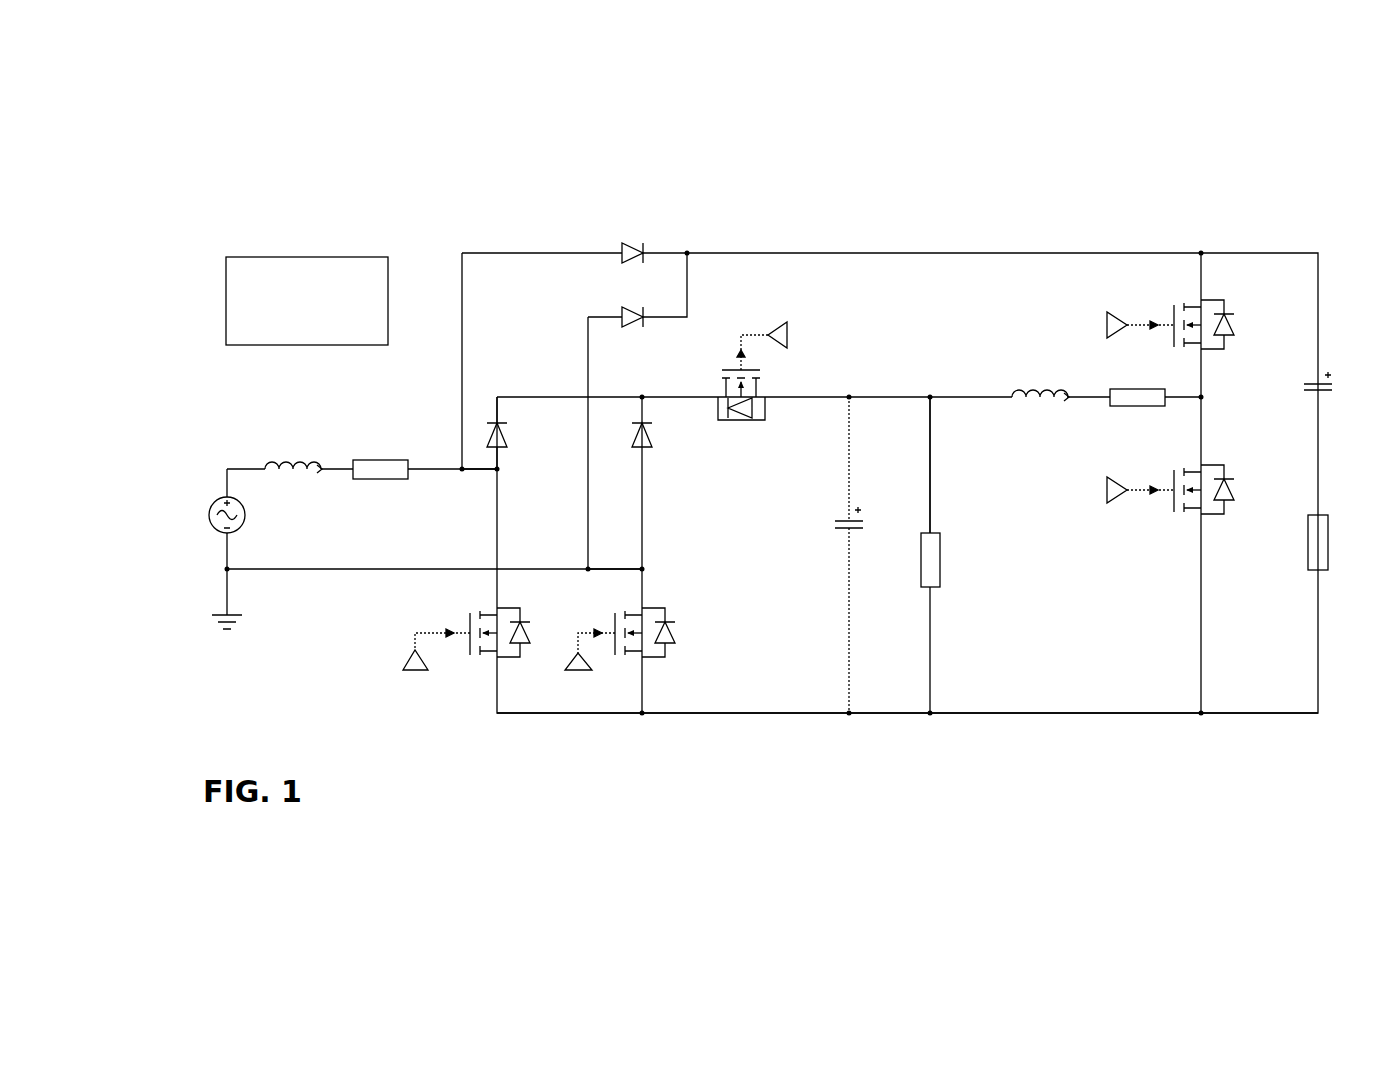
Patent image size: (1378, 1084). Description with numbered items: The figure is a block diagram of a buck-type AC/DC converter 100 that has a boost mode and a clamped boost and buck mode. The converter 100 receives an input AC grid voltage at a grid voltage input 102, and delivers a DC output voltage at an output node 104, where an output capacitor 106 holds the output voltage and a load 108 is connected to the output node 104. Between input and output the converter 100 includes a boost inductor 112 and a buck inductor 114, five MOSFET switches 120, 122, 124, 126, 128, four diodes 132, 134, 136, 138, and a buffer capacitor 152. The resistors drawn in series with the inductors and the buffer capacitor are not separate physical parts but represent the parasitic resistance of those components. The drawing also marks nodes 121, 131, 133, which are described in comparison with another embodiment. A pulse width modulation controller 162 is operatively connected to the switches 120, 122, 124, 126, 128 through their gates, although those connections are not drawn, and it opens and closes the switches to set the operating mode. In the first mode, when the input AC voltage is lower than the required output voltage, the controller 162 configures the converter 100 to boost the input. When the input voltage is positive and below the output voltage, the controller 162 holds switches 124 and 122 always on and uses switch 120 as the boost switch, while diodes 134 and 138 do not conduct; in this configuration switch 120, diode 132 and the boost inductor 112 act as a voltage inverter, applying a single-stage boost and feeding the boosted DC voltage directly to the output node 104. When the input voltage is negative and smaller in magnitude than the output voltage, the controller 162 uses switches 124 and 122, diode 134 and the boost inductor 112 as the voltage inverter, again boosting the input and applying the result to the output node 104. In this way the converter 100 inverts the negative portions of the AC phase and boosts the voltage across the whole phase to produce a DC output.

The buck-type AC/DC converter 100 is at (281, 130).
The pulse width modulation (PWM) controller 162 is at (307, 301).
The grid voltage input 102 is at (262, 514).
The boost inductor 112 is at (262, 460).
The node 131 is at (487, 477).
The diode 132 is at (528, 453).
The diode 136 is at (657, 453).
The node 133 is at (650, 565).
The diode 134 is at (620, 236).
The diode 138 is at (612, 307).
The MOSFET switch 124 is at (805, 373).
The output node 104 is at (940, 488).
The load 108 is at (950, 559).
The output capacitor 106 is at (843, 538).
The buck inductor 114 is at (1013, 382).
The MOSFET switch 120 is at (388, 652).
The MOSFET switch 122 is at (712, 638).
The node 121 is at (638, 720).
The MOSFET switch 126 is at (1108, 300).
The MOSFET switch 128 is at (1177, 527).
The buffer capacitor 152 is at (1310, 372).